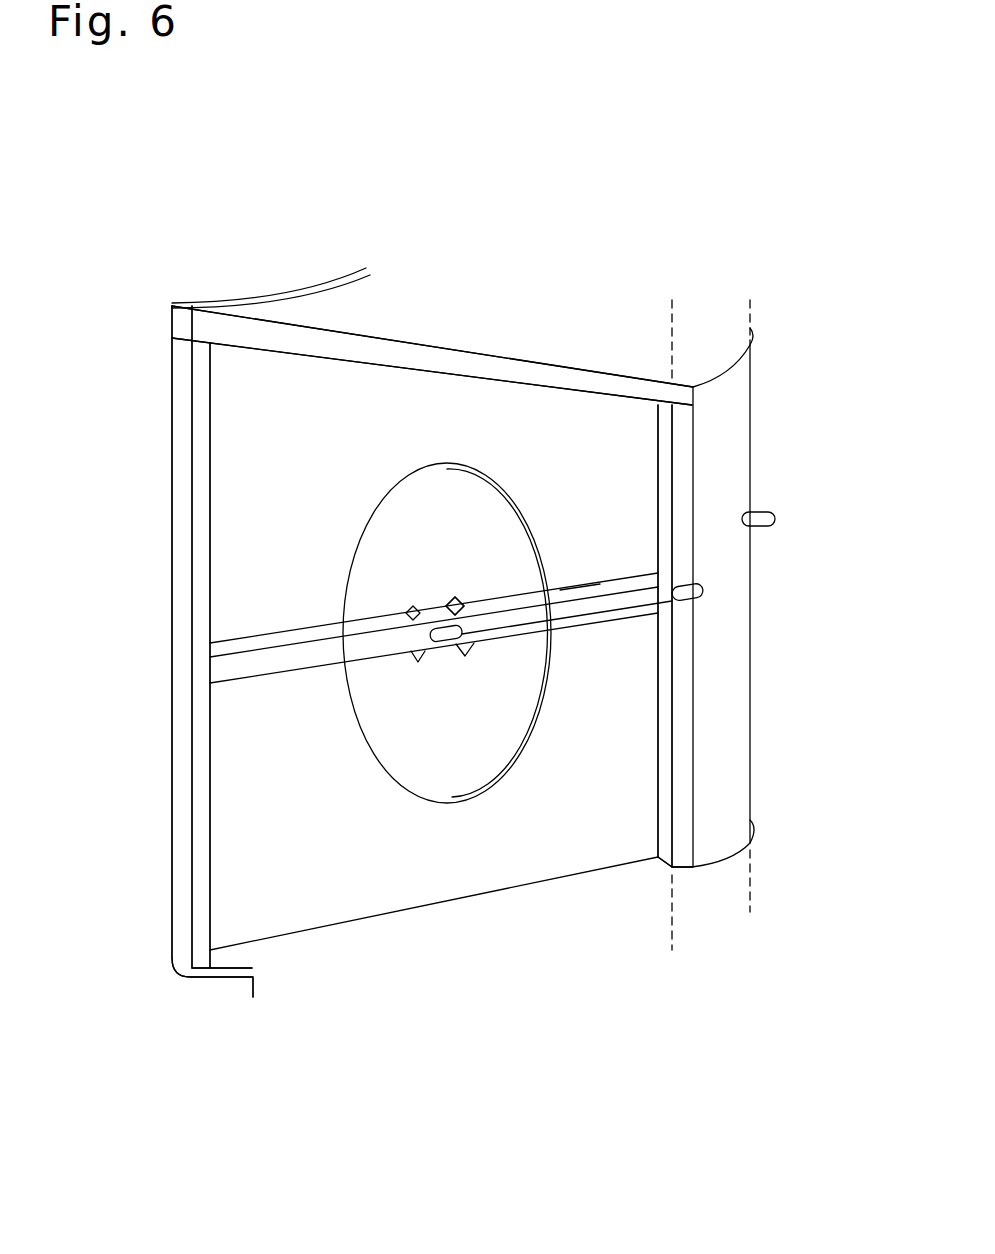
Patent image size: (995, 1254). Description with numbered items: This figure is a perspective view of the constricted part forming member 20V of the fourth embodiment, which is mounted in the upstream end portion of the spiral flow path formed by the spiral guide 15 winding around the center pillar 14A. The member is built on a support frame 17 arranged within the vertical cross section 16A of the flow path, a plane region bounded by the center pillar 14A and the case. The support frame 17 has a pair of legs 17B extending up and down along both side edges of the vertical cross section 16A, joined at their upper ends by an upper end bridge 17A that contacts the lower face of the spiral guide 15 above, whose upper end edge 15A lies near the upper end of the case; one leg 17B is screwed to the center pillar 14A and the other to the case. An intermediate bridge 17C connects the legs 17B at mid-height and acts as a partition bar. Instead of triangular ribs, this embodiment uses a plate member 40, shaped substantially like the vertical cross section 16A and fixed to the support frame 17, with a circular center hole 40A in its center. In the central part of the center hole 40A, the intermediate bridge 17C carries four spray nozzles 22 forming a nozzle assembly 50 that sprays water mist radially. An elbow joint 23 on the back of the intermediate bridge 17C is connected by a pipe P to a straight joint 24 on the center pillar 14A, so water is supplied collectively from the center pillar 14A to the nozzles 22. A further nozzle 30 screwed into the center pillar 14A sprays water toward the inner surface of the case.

The support frame 17 is at (172, 797).
The upper end bridge 17A is at (410, 357).
The legs 17B is at (207, 832).
The intermediate bridge 17C is at (318, 658).
The spiral guide 15 is at (213, 977).
The upper end edge 15A is at (360, 920).
The vertical cross section 16A is at (655, 850).
The center pillar 14A is at (752, 750).
The constricted part forming member 20V is at (172, 443).
The spray nozzles 22 is at (413, 606).
The elbow joint 23 is at (462, 641).
The straight joint 24 is at (705, 592).
The nozzles 30 is at (772, 514).
The plate member 40 is at (235, 570).
The center hole 40A is at (345, 585).
The nozzle assembly 50 is at (458, 602).
The pipe P is at (585, 625).